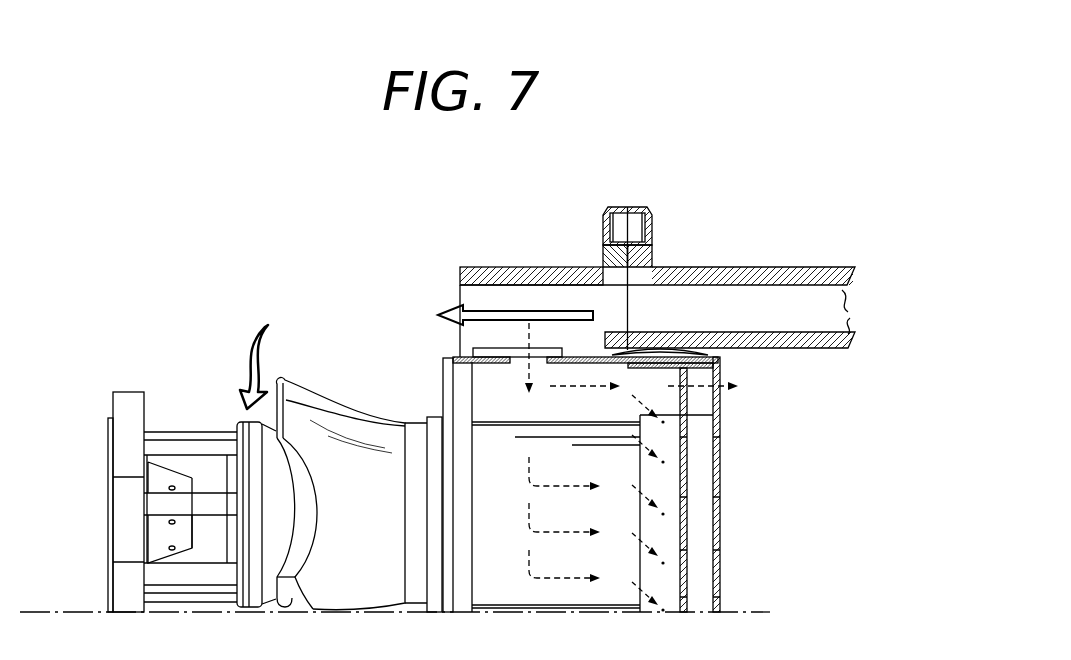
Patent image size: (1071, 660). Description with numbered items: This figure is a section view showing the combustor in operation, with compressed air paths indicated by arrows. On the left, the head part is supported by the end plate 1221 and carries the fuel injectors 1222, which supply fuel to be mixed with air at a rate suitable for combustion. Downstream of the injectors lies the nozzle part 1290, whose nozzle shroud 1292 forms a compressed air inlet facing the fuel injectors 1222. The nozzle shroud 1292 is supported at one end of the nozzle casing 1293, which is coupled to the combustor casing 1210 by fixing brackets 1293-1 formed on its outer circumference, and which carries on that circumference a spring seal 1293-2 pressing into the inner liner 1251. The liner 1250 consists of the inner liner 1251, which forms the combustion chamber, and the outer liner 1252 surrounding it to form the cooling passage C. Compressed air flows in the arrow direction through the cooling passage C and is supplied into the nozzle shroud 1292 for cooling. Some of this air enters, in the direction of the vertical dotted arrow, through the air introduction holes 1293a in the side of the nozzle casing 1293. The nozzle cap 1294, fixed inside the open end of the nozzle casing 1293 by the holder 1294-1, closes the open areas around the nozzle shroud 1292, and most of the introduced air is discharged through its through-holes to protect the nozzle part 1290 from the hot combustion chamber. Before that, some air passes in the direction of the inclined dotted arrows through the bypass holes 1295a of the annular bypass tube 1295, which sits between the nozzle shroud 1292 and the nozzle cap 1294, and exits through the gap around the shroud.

The combustor casing 1210 is at (489, 268).
The end plate 1221 is at (128, 441).
The fuel injector 1222 is at (176, 426).
The liner 1250 is at (661, 249).
The inner liner 1251 is at (817, 340).
The outer liner 1252 is at (775, 272).
The nozzle part 1290 is at (428, 245).
The nozzle shroud 1292 is at (350, 423).
The nozzle casing 1293 is at (462, 405).
The fixing bracket 1293-1 is at (505, 370).
The spring seal 1293-2 is at (659, 350).
The air introduction hole 1293a is at (478, 354).
The nozzle cap 1294 is at (720, 473).
The holder 1294-1 is at (697, 368).
The annular bypass tube 1295 is at (667, 533).
The bypass hole 1295a is at (663, 462).
The cooling passage C is at (728, 310).